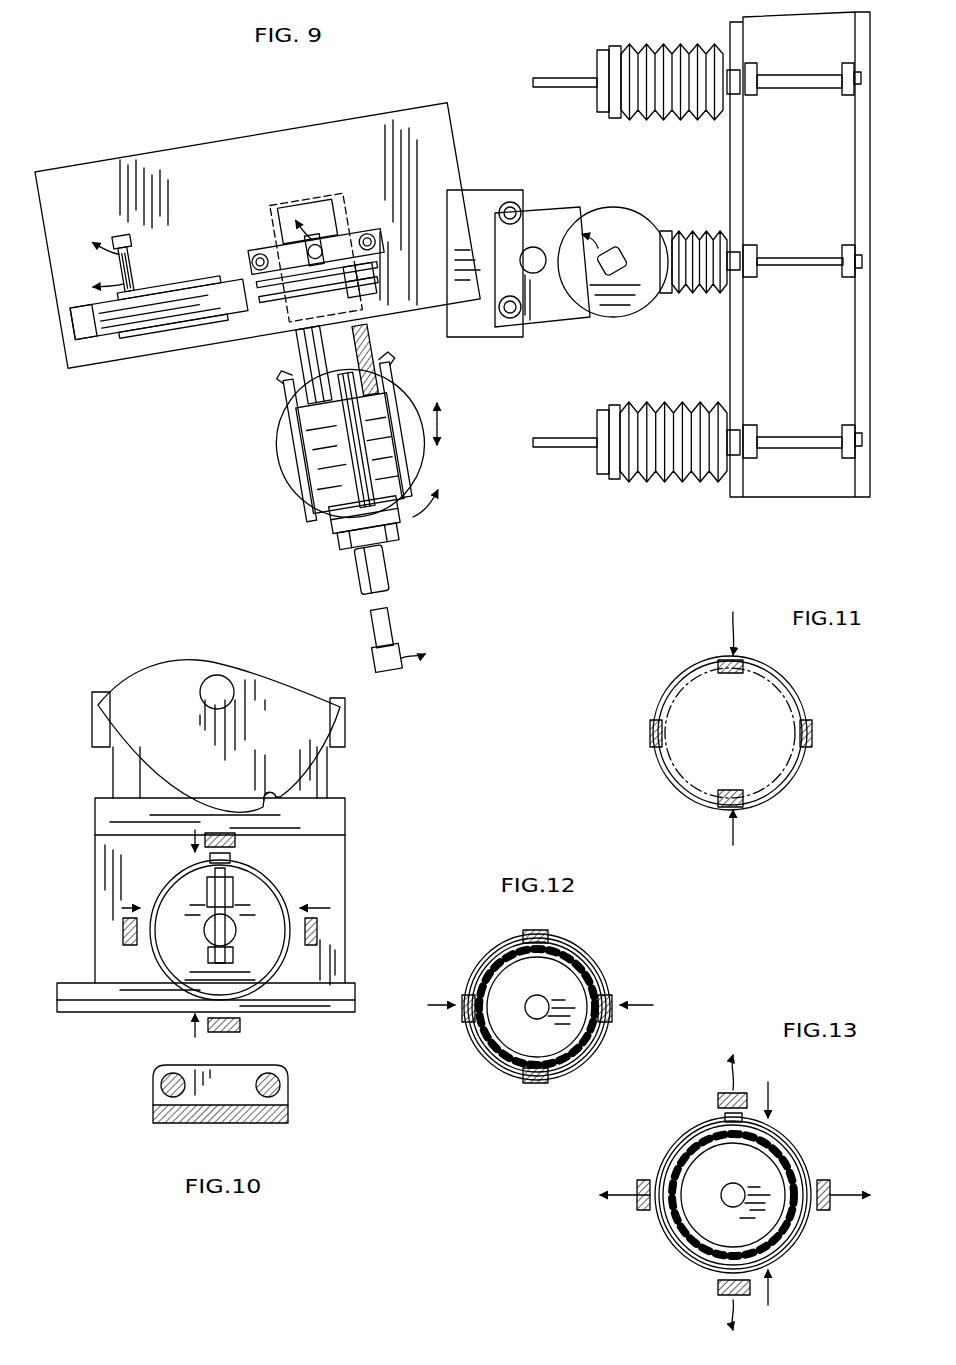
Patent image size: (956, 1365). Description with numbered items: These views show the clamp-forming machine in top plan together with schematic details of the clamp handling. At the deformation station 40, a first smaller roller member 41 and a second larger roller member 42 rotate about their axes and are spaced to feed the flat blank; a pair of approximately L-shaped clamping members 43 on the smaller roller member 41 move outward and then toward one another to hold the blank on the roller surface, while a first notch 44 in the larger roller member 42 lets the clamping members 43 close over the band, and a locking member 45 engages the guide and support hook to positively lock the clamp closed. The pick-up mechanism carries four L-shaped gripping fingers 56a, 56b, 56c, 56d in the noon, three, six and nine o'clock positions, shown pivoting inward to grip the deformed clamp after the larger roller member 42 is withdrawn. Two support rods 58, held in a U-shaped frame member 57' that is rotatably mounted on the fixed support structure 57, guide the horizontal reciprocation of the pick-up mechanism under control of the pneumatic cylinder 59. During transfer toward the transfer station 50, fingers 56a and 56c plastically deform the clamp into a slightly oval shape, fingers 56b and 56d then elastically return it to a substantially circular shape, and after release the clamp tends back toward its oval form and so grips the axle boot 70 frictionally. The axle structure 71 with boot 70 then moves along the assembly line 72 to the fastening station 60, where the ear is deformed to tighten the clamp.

In FIG. 9, the deformation station 40 is at (265, 318).
In FIG. 10, the deformation station 40 is at (352, 778).
In FIG. 10, the first smaller roller member 41 is at (262, 893).
In FIG. 9, the second larger roller member 42 is at (377, 272).
In FIG. 10, the second larger roller member 42 is at (125, 745).
In FIG. 10, the clamping members 43 is at (220, 907).
In FIG. 10, the first notch 44 is at (273, 789).
In FIG. 9, the locking member 45 is at (380, 287).
In FIG. 9, the transfer station 50 is at (632, 395).
In FIG. 9, the gripping finger 56a is at (308, 428).
In FIG. 10, the gripping finger 56a is at (235, 840).
In FIG. 11, the gripping finger 56a is at (718, 662).
In FIG. 12, the gripping finger 56a is at (548, 932).
In FIG. 13, the gripping finger 56a is at (718, 1100).
In FIG. 9, the gripping finger 56b is at (338, 385).
In FIG. 10, the gripping finger 56b is at (317, 932).
In FIG. 11, the gripping finger 56b is at (812, 745).
In FIG. 12, the gripping finger 56b is at (612, 1012).
In FIG. 13, the gripping finger 56b is at (830, 1205).
In FIG. 10, the gripping finger 56c is at (230, 1032).
In FIG. 11, the gripping finger 56c is at (743, 805).
In FIG. 12, the gripping finger 56c is at (523, 1080).
In FIG. 13, the gripping finger 56c is at (718, 1290).
In FIG. 9, the gripping finger 56d is at (386, 367).
In FIG. 10, the gripping finger 56d is at (123, 932).
In FIG. 11, the gripping finger 56d is at (650, 733).
In FIG. 12, the gripping finger 56d is at (462, 1010).
In FIG. 13, the gripping finger 56d is at (637, 1190).
In FIG. 10, the support structure 57 is at (196, 1113).
In FIG. 9, the U-shaped frame member 57' is at (342, 526).
In FIG. 9, the support rods 58 is at (307, 348).
In FIG. 10, the support rods 58 is at (155, 1072).
In FIG. 9, the pneumatic cylinder 59 is at (395, 610).
In FIG. 9, the fastening station 60 is at (632, 205).
In FIG. 9, the axle boot 70 is at (680, 233).
In FIG. 12, the axle boot 70 is at (543, 950).
In FIG. 13, the axle boot 70 is at (725, 1133).
In FIG. 9, the axle structure 71 is at (793, 257).
In FIG. 9, the assembly line 72 is at (865, 227).